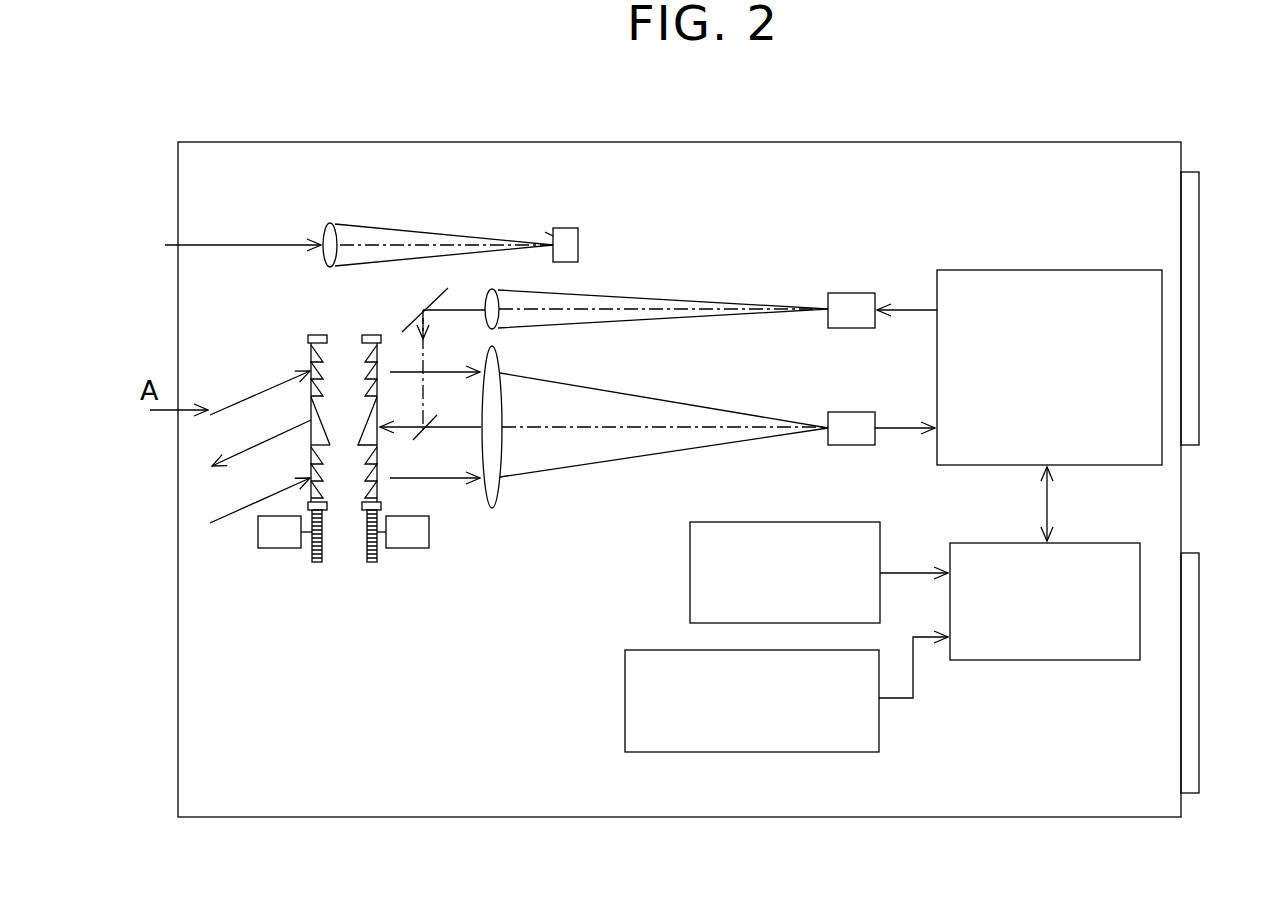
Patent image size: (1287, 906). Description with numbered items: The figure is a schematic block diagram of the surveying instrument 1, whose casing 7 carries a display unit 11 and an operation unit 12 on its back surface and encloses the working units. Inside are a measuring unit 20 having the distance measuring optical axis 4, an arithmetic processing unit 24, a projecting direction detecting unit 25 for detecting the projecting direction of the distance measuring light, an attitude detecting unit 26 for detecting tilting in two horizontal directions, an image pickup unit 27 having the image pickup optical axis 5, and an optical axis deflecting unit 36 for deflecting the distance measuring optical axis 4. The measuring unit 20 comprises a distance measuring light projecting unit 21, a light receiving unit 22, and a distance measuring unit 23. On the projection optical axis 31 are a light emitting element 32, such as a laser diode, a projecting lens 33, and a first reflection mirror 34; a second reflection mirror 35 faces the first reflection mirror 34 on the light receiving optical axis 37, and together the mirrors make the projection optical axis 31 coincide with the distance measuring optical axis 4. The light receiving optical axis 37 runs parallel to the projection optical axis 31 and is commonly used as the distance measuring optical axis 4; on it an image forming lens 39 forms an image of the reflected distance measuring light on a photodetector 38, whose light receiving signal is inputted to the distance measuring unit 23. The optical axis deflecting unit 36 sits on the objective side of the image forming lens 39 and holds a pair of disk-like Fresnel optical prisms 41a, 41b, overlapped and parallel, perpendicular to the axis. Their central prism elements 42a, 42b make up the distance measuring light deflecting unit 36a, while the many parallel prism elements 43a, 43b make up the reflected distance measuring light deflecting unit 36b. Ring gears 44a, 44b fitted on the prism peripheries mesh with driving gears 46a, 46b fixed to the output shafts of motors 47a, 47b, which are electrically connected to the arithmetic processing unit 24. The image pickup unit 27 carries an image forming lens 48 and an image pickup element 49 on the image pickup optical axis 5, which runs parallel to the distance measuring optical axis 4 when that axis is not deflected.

The surveying instrument 1 is at (679, 437).
The distance measuring optical axis 4 is at (410, 430).
The image pickup optical axis 5 is at (406, 246).
The casing 7 is at (833, 142).
The display unit 11 is at (1199, 283).
The operation unit 12 is at (1199, 630).
The measuring unit 20 is at (815, 383).
The distance measuring light projecting unit 21 is at (696, 302).
The light receiving unit 22 is at (673, 394).
The distance measuring unit 23 is at (1033, 270).
The arithmetic processing unit 24 is at (1100, 543).
The projecting direction detecting unit 25 is at (737, 752).
The attitude detecting unit 26 is at (778, 522).
The image pickup unit 27 is at (524, 229).
The projection optical axis 31 is at (577, 300).
The light emitting element 32 is at (845, 293).
The projecting lens 33 is at (497, 320).
The first reflection mirror 34 is at (440, 288).
The second reflection mirror 35 is at (413, 442).
The optical axis deflecting unit 36 is at (337, 333).
The distance measuring light deflecting unit 36a is at (297, 415).
The reflected distance measuring light deflecting unit 36b is at (304, 357).
The light receiving optical axis 37 is at (613, 428).
The photodetector 38 is at (843, 412).
The image forming lens 39 is at (503, 490).
The optical prism 41a is at (304, 483).
The optical prism 41b is at (382, 487).
The prism element 42a is at (305, 408).
The prism element 42b is at (358, 433).
The prism elements 43a is at (304, 464).
The prism elements 43b is at (368, 373).
The ring gear 44a is at (262, 548).
The ring gear 44b is at (414, 548).
The driving gear 46a is at (316, 562).
The driving gear 46b is at (371, 562).
The motor 47a is at (280, 548).
The motor 47b is at (420, 548).
The image forming lens 48 is at (328, 223).
The image pickup element 49 is at (578, 235).